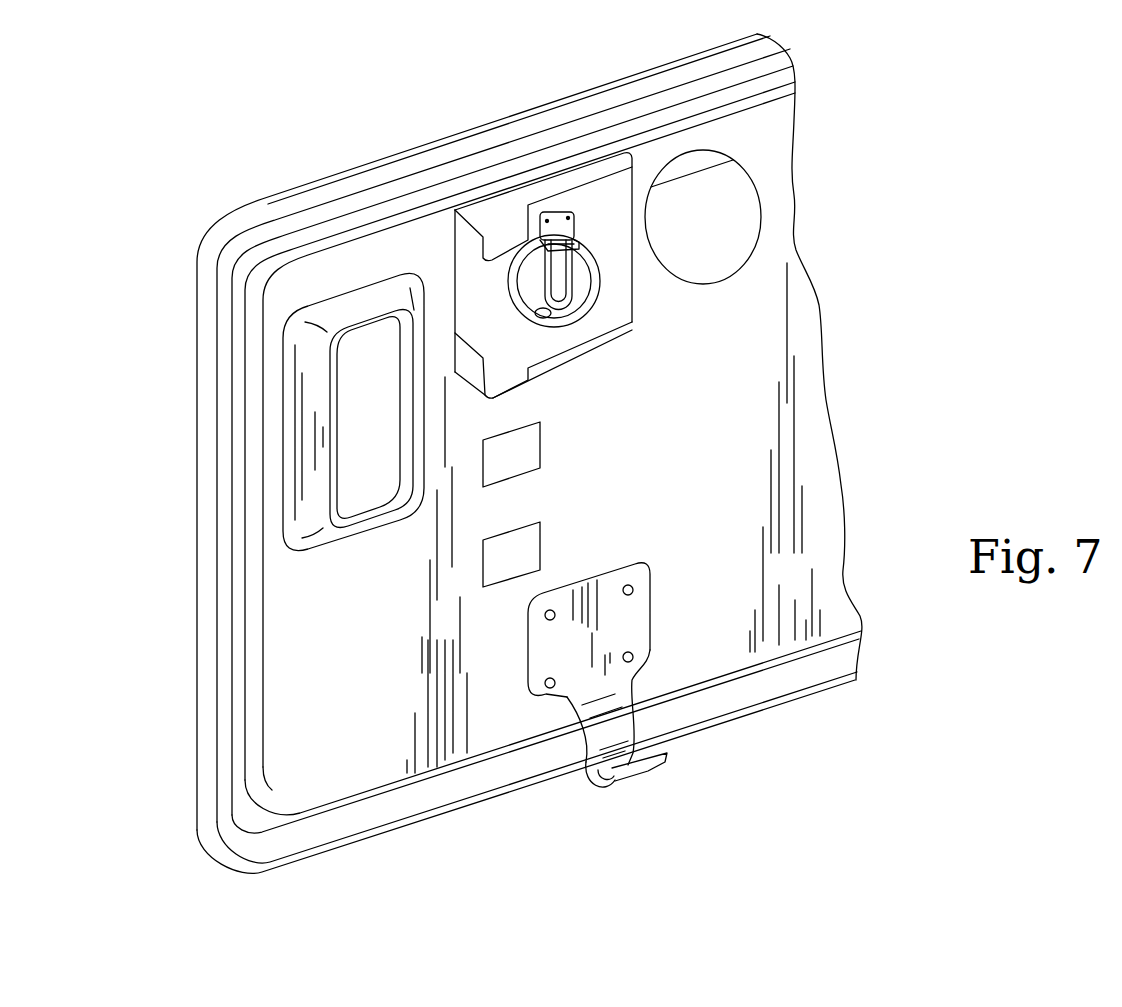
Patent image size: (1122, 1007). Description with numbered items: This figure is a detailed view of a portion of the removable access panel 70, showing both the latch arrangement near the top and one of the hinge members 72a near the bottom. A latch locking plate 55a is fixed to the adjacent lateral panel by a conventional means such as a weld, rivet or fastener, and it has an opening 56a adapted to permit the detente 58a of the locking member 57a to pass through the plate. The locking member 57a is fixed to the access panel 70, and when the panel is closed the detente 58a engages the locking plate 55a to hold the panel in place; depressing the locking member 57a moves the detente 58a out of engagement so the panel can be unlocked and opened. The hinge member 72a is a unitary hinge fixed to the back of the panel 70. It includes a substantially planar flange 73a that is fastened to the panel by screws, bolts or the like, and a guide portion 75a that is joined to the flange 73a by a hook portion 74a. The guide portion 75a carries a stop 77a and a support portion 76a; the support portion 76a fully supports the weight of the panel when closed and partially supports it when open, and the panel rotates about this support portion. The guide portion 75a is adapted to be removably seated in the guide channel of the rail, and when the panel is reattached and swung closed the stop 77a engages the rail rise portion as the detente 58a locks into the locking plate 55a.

The access panel 70 is at (843, 97).
The latch locking plate 55a is at (617, 333).
The opening 56a is at (538, 312).
The locking member 57a is at (493, 283).
The detente 58a is at (573, 222).
The hinge member 72a is at (512, 652).
The planar flange 73a is at (632, 612).
The hook portion 74a is at (665, 703).
The guide portion 75a is at (628, 790).
The support portion 76a is at (578, 762).
The stop 77a is at (647, 770).